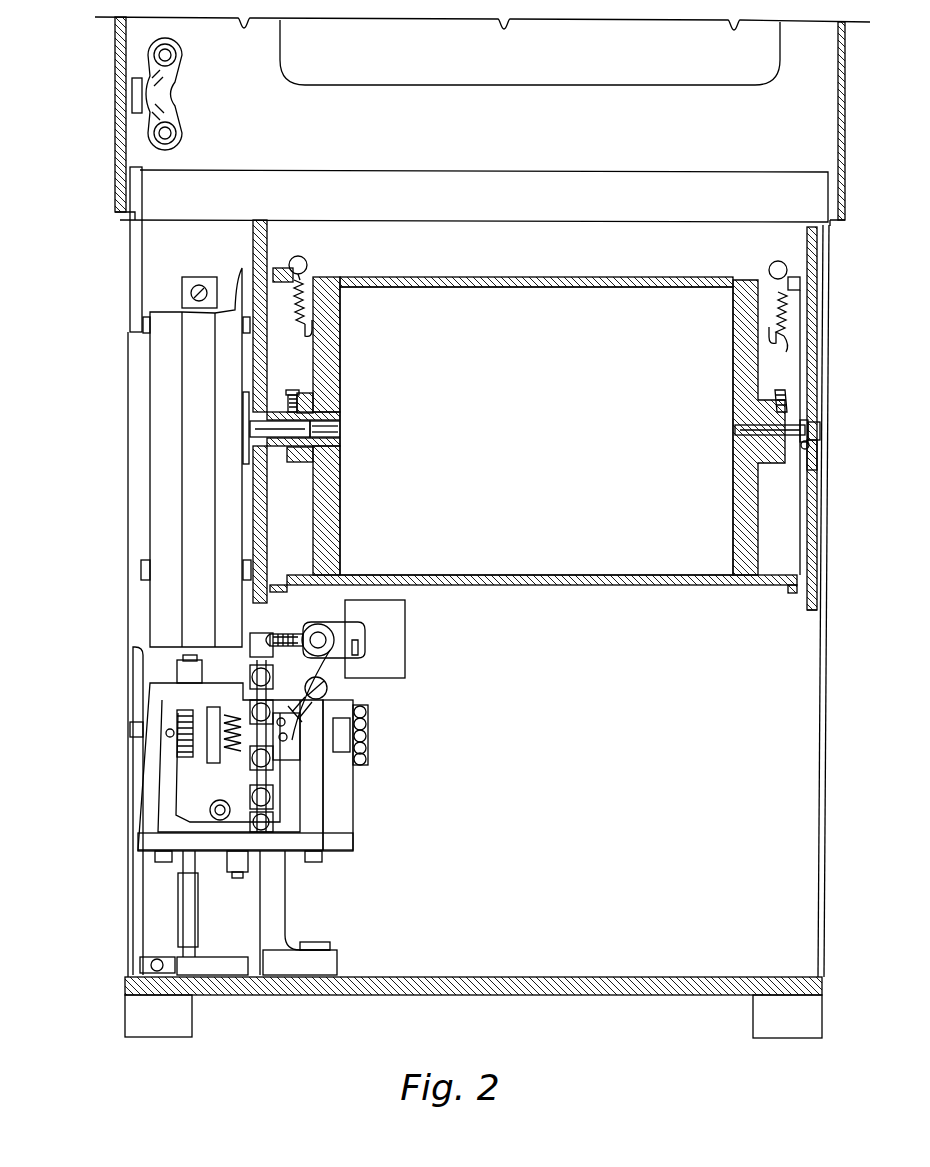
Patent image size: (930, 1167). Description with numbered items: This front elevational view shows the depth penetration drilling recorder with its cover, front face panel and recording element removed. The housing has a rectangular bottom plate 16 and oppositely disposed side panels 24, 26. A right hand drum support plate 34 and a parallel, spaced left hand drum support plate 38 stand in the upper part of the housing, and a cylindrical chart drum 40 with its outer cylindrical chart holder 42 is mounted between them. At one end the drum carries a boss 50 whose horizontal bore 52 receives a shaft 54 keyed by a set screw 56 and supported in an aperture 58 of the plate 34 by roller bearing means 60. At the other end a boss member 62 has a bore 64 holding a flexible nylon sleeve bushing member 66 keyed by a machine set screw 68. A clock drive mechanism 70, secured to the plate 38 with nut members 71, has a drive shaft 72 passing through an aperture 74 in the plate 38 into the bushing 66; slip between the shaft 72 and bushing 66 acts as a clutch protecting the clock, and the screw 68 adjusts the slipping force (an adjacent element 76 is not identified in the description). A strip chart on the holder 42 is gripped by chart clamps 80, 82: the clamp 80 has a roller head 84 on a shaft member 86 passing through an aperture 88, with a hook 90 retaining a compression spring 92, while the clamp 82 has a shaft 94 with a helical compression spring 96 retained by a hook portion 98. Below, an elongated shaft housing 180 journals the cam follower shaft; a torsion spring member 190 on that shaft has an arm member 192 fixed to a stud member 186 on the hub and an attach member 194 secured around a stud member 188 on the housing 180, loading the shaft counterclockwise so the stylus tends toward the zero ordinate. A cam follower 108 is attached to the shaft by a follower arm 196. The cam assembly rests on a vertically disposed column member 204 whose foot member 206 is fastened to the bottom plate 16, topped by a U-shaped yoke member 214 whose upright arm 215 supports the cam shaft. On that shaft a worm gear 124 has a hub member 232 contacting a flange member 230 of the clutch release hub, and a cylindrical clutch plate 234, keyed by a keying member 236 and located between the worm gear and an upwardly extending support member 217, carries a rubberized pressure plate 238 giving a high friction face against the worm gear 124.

The bottom plate 16 is at (470, 995).
The side panel 24 is at (135, 655).
The side panel 26 is at (826, 782).
The right hand drum support plate 34 is at (812, 612).
The left hand drum support plate 38 is at (260, 247).
The chart drum 40 is at (423, 270).
The chart holder 42 is at (565, 277).
The boss 50 is at (772, 465).
The bore 52 is at (740, 432).
The shaft 54 is at (818, 378).
The set screw 56 is at (772, 402).
The aperture 58 is at (814, 440).
The roller bearing means 60 is at (820, 417).
The boss member 62 is at (340, 485).
The bore 64 is at (340, 416).
The sleeve bushing member 66 is at (340, 443).
The machine set screw 68 is at (300, 395).
The clock drive mechanism 70 is at (182, 390).
The nut member 71 is at (149, 330).
The drive shaft 72 is at (340, 432).
The aperture 74 is at (262, 430).
The lower wall portion 76 is at (277, 450).
The chart clamp 80 is at (303, 258).
The chart clamp 82 is at (783, 262).
The roller head 84 is at (283, 266).
The shaft member 86 is at (306, 300).
The aperture 88 is at (307, 268).
The hook 90 is at (340, 345).
The compression spring 92 is at (301, 330).
The shaft 94 is at (778, 305).
The helical compression spring 96 is at (778, 354).
The hook portion 98 is at (770, 338).
The cam follower 108 is at (270, 585).
The worm gear 124 is at (215, 748).
The shaft housing 180 is at (405, 630).
The stud member 186 is at (368, 735).
The stud member 188 is at (368, 658).
The torsion spring member 190 is at (330, 625).
The arm member 192 is at (293, 630).
The attach member 194 is at (405, 601).
The follower arm 196 is at (324, 682).
The column member 204 is at (268, 918).
The foot member 206 is at (320, 957).
The U-shaped yoke member 214 is at (292, 855).
The upright arm 215 is at (335, 803).
The upwardly extending support member 217 is at (160, 815).
The flange member 230 is at (175, 827).
The hub member 232 is at (207, 707).
The clutch plate 234 is at (175, 745).
The keying member 236 is at (166, 734).
The pressure plate 238 is at (175, 718).